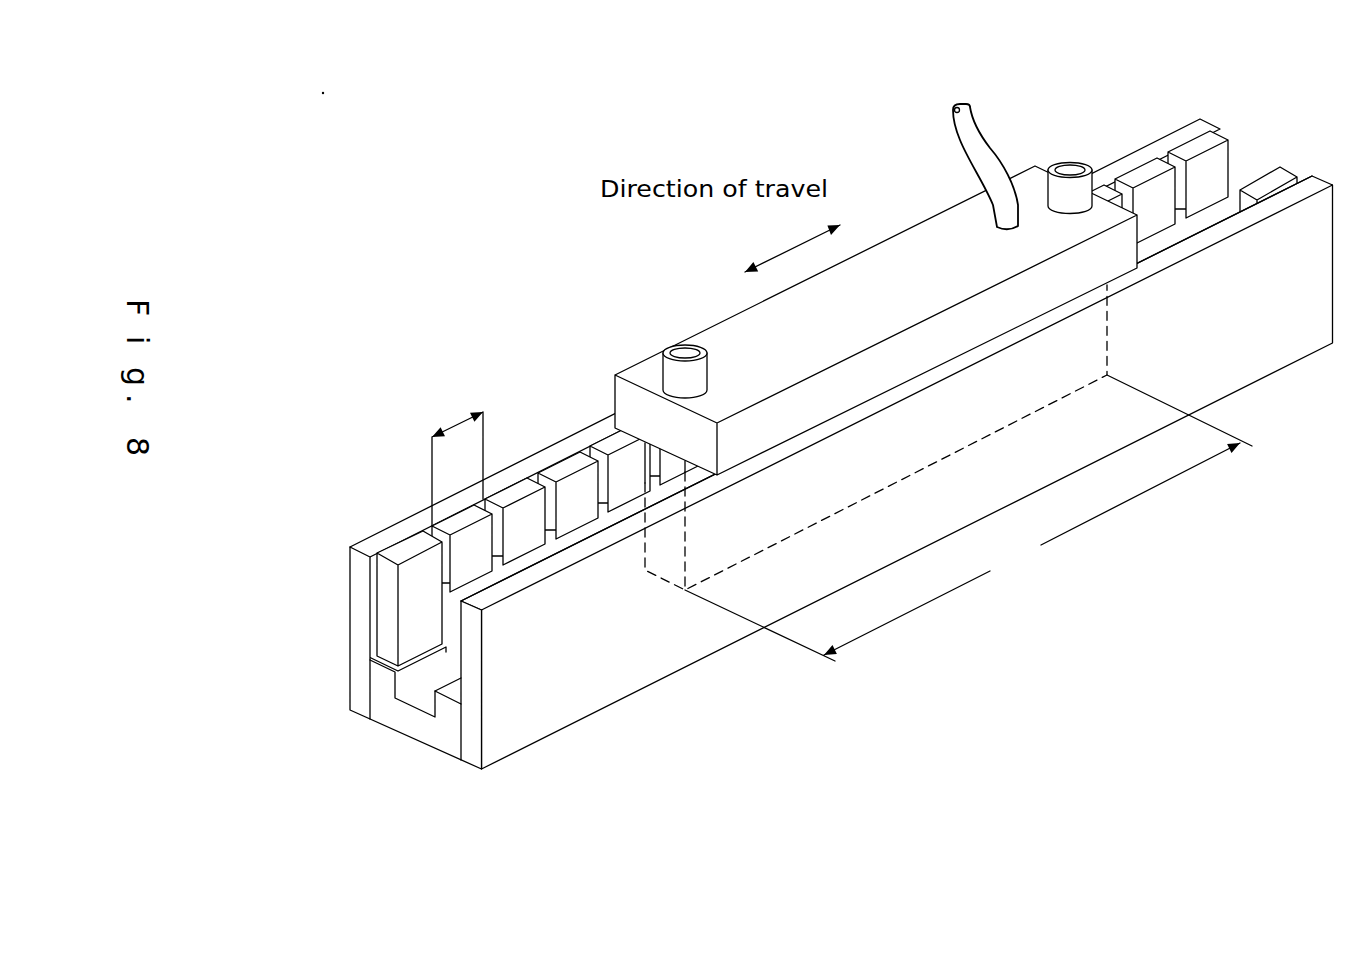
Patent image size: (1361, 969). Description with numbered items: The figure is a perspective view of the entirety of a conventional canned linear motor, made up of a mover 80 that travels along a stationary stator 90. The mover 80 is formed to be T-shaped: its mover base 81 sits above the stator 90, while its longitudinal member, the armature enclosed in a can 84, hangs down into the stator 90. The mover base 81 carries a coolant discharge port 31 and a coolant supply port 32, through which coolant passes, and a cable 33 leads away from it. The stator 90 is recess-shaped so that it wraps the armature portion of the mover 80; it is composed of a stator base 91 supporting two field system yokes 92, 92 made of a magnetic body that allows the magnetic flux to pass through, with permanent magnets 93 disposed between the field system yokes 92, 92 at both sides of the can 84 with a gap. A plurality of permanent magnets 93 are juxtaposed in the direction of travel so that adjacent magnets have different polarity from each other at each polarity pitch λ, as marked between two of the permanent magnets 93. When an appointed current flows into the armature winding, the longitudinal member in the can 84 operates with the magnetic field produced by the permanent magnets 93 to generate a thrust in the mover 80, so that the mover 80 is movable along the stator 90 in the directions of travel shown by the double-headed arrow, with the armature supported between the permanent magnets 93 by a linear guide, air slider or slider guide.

The mover 80 is at (832, 323).
The mover base 81 is at (930, 250).
The coolant discharge port 31 is at (680, 343).
The coolant supply port 32 is at (1073, 165).
The cable 33 is at (962, 133).
The can 84 is at (653, 462).
The stator 90 is at (824, 456).
The stator base 91 is at (440, 735).
The field system yoke 92 is at (357, 637).
The permanent magnet 93 is at (383, 592).